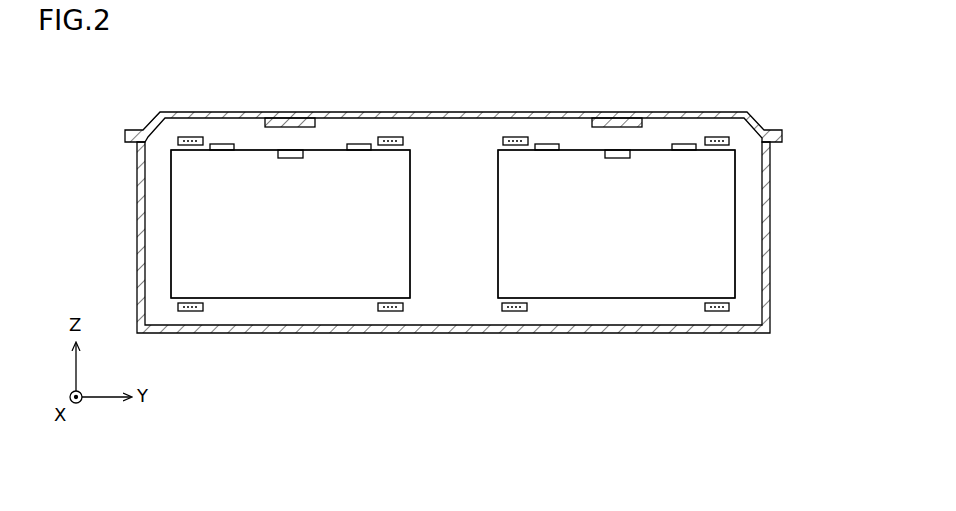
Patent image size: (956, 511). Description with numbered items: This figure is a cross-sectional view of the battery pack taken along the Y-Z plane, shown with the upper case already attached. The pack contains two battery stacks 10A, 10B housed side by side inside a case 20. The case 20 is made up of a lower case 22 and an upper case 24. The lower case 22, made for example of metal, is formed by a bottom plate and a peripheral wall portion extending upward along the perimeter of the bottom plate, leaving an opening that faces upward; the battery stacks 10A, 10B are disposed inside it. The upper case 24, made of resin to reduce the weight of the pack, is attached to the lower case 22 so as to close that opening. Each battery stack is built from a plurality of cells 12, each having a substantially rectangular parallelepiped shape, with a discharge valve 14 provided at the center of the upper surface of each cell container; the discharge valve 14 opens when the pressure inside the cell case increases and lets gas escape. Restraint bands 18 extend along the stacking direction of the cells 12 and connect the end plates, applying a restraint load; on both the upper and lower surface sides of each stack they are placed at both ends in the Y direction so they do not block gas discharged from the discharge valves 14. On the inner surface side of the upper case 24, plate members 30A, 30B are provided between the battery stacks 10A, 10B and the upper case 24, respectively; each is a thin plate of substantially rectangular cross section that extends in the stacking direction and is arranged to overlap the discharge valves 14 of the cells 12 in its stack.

The battery stack 10A is at (292, 345).
The battery stack 10B is at (623, 345).
The cell 12 is at (196, 260).
The discharge valve 14 is at (291, 162).
The restraint band 18 is at (190, 136).
The case 20 is at (500, 215).
The lower case 22 is at (485, 237).
The upper case 24 is at (757, 113).
The plate member 30A is at (288, 117).
The plate member 30B is at (615, 117).